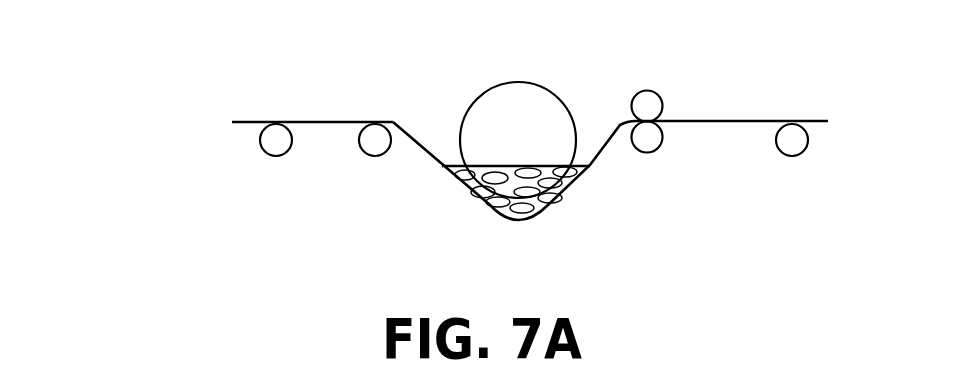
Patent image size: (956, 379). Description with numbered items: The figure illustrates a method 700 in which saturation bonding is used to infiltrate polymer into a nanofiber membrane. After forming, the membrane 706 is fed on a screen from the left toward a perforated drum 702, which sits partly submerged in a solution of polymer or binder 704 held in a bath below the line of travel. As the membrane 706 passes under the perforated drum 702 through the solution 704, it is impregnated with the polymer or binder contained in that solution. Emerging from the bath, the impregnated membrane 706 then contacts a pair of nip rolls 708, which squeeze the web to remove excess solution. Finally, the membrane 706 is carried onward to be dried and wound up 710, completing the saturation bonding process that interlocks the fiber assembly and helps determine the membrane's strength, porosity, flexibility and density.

The method 700 is at (106, 57).
The perforated drum 702 is at (478, 98).
The solution of polymer or binder 704 is at (550, 205).
The membrane 706 is at (240, 120).
The nip rolls 708 is at (662, 98).
The drying and winding up 710 is at (813, 118).